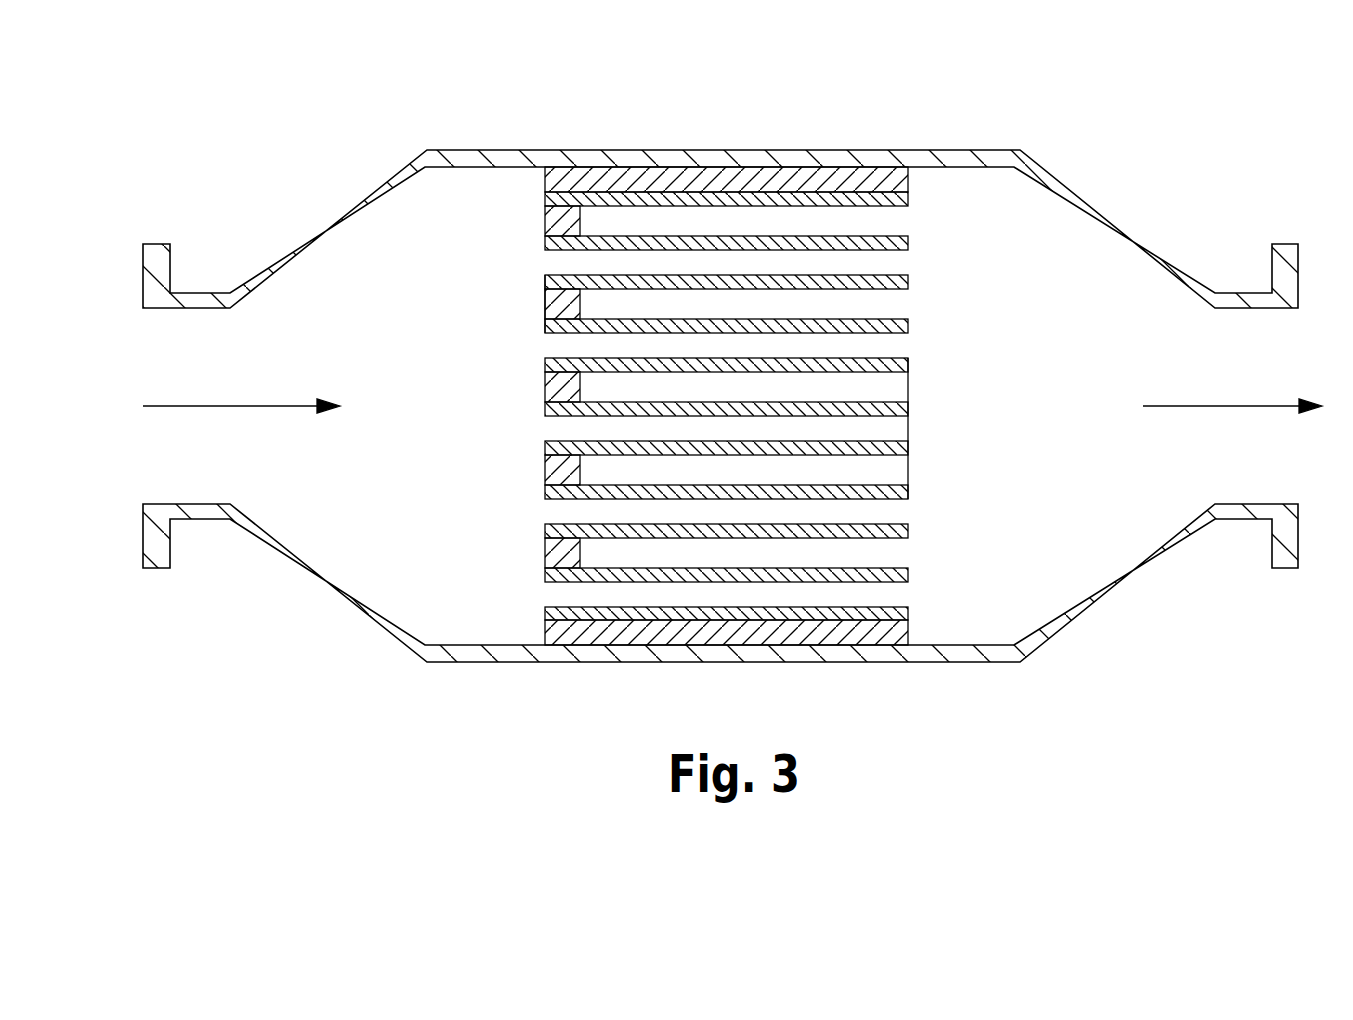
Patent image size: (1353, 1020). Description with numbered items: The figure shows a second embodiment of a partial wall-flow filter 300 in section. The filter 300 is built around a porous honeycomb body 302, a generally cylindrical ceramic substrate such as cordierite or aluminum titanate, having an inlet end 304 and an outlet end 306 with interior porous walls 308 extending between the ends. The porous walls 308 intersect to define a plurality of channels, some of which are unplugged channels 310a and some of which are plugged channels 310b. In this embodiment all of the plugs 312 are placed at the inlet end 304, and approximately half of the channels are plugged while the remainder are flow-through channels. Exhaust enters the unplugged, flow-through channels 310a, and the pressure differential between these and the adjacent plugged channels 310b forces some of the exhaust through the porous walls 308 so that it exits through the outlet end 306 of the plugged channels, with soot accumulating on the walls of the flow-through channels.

The partial wall-flow filter 300 is at (1034, 101).
The porous honeycomb body 302 is at (852, 633).
The inlet end 304 is at (645, 461).
The outlet end 306 is at (932, 481).
The porous walls 308 is at (630, 533).
The unplugged channels 310a is at (537, 262).
The plugged channels 310b is at (902, 388).
The plugs 312 is at (545, 470).